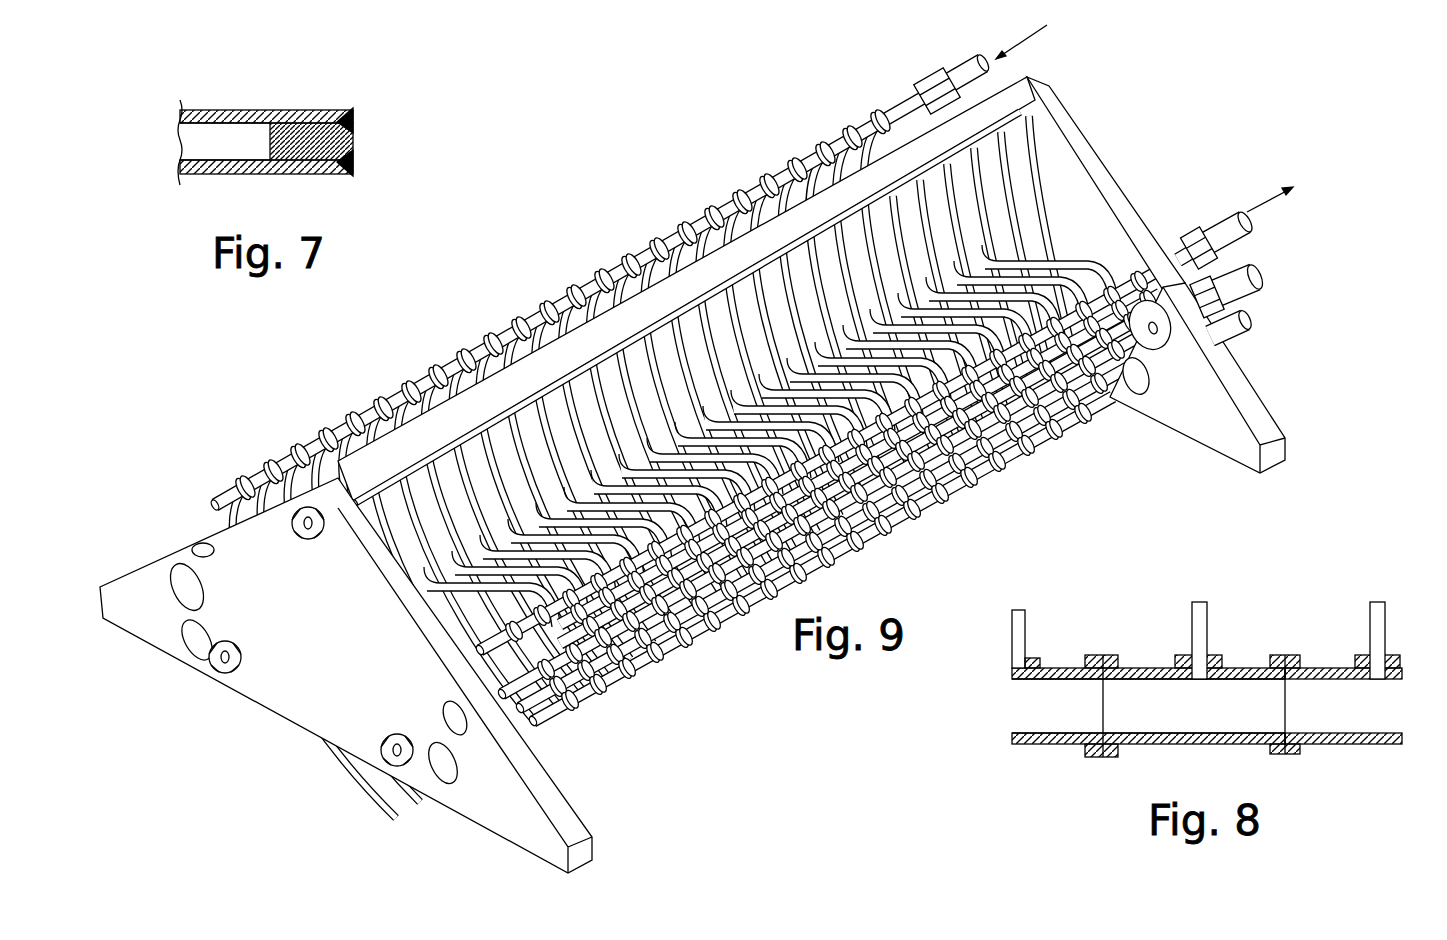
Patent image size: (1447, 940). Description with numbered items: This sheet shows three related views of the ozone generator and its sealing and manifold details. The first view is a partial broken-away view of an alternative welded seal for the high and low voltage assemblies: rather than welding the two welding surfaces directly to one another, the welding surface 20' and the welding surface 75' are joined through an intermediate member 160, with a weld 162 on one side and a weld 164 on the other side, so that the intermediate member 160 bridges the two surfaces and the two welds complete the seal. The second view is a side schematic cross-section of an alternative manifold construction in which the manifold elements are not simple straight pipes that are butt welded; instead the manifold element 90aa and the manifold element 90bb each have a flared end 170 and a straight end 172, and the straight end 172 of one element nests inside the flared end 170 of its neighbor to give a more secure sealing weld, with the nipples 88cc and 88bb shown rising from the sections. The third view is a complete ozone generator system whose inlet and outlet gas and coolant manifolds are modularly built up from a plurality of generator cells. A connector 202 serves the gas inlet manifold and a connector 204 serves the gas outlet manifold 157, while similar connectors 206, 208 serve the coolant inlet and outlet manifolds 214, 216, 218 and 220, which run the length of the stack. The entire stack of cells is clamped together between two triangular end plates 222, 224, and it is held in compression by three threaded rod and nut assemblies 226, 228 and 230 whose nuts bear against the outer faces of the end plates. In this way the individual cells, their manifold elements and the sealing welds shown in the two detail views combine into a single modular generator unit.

In FIG. 7, the welding surface 20' is at (265, 122).
In FIG. 7, the welding surface 75' is at (266, 189).
In FIG. 7, the intermediate member 160 is at (270, 142).
In FIG. 7, the weld 162 is at (357, 122).
In FIG. 7, the weld 164 is at (357, 162).
In FIG. 8, the manifold element 88cc is at (1205, 615).
In FIG. 8, the manifold element 88bb is at (1385, 620).
In FIG. 8, the flared end 170 is at (1095, 656).
In FIG. 8, the straight end 172 is at (1236, 662).
In FIG. 8, the manifold element 90aa is at (1170, 746).
In FIG. 8, the manifold element 90bb is at (1328, 746).
In FIG. 9, the connector 202 is at (953, 66).
In FIG. 9, the outlet manifold 157 is at (1163, 242).
In FIG. 9, the connector 204 is at (1250, 229).
In FIG. 9, the connector 206 is at (1262, 284).
In FIG. 9, the connector 208 is at (1250, 325).
In FIG. 9, the triangular end plate 224 is at (1268, 406).
In FIG. 9, the triangular end plate 222 is at (572, 806).
In FIG. 9, the coolant manifold 218 is at (170, 585).
In FIG. 9, the coolant manifold 220 is at (187, 637).
In FIG. 9, the threaded rod and nut assembly 226 is at (228, 678).
In FIG. 9, the threaded rod and nut assembly 228 is at (317, 543).
In FIG. 9, the threaded rod and nut assembly 230 is at (380, 757).
In FIG. 9, the coolant manifold 214 is at (893, 522).
In FIG. 9, the coolant manifold 216 is at (912, 502).